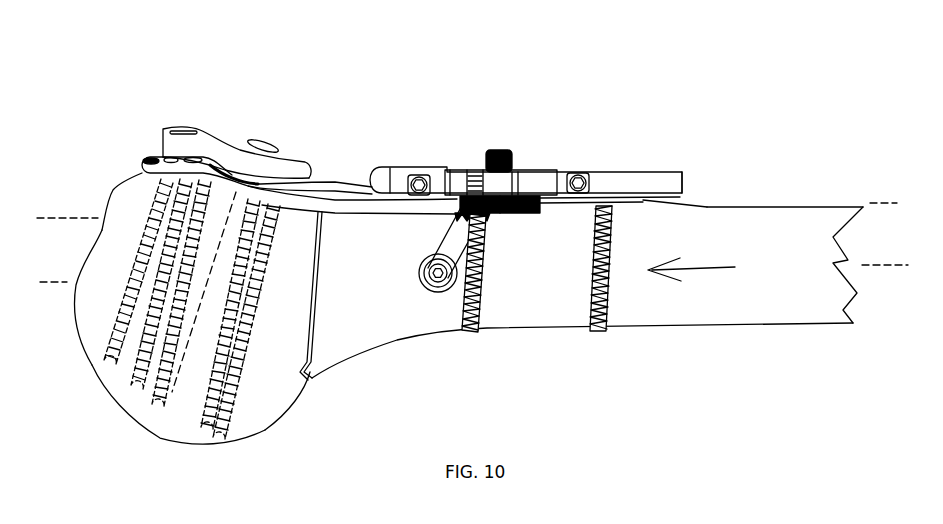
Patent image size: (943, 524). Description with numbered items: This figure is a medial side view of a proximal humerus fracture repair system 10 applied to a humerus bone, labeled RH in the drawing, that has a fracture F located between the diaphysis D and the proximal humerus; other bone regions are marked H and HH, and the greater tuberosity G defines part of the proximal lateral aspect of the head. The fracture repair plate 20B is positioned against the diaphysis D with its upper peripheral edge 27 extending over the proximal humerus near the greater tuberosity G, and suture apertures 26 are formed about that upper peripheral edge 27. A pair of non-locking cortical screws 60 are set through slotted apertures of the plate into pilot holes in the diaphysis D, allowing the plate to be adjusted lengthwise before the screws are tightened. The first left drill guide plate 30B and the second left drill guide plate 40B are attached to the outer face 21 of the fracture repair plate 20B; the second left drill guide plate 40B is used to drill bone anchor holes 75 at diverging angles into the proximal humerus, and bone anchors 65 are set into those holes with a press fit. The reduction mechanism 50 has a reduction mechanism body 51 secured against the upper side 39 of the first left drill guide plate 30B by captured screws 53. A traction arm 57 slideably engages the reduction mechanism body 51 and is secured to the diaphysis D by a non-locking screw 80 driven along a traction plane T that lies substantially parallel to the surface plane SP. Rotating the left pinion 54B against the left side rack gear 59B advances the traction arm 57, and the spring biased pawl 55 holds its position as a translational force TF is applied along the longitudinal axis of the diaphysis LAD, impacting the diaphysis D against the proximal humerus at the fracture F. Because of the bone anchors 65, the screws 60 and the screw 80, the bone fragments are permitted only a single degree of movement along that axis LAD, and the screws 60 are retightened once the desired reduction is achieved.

The proximal humerus fracture repair system 10 is at (290, 60).
The reduction mechanism 50 is at (555, 75).
The second left drill guide plate 40B is at (162, 128).
The suture aperture 26 is at (147, 159).
The upper peripheral edge 27 is at (141, 163).
The fracture repair plate 20B is at (357, 203).
The outer face 21 is at (645, 200).
The first left drill guide plate 30B is at (670, 173).
The upper side 39 is at (615, 187).
The reduction mechanism body 51 is at (437, 176).
The captured screw 53 is at (577, 173).
The spring biased pawl 55 is at (458, 170).
The left pinion 54B is at (498, 218).
The left side rack gear 59B is at (538, 217).
The traction arm 57 is at (419, 254).
The non-locking screw 80 is at (438, 292).
The non-locking cortical screws 60 is at (472, 332).
The bone anchors 65 is at (212, 438).
The bone anchor hole 75 is at (172, 392).
The greater tuberosity G is at (116, 193).
The humeral head H is at (76, 317).
The humeral head surface HH is at (116, 410).
The fracture F is at (297, 335).
The longitudinal axis of the diaphysis LAD is at (40, 282).
The diaphysis D is at (768, 322).
The right humerus RH is at (792, 208).
The surface plane SP is at (883, 202).
The traction plane T is at (882, 265).
The translational force TF is at (708, 267).